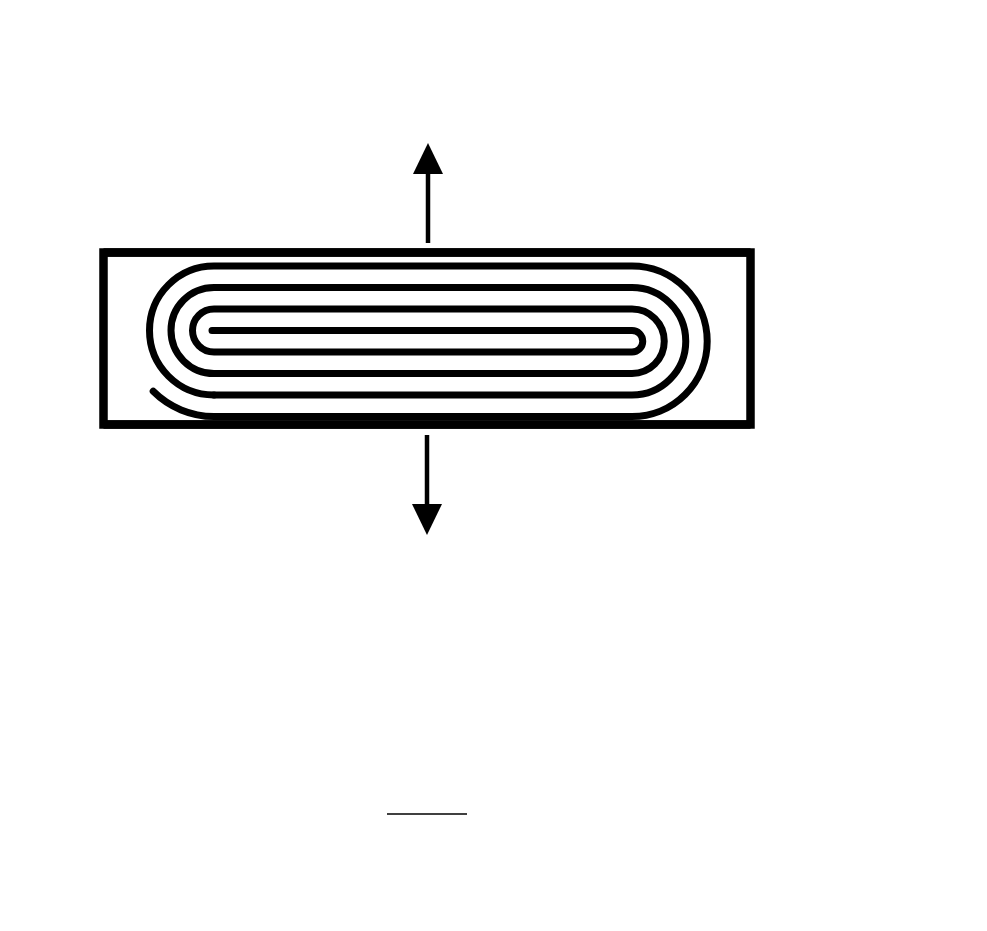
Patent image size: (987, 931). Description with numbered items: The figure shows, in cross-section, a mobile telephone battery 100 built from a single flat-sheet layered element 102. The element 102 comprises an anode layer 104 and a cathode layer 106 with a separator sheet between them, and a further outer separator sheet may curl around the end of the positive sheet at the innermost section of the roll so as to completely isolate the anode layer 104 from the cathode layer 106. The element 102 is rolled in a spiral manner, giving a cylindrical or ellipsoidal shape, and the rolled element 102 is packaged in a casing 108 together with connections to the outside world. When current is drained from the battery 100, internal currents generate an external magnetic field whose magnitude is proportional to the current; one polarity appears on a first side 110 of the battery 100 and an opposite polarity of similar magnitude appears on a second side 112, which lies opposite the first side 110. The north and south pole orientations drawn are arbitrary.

The mobile telephone battery 100 is at (885, 113).
The flat-sheet layered element 102 is at (152, 393).
The anode layer 104 is at (132, 314).
The cathode layer 106 is at (168, 352).
The casing 108 is at (755, 252).
The first side 110 is at (548, 238).
The second side 112 is at (548, 441).